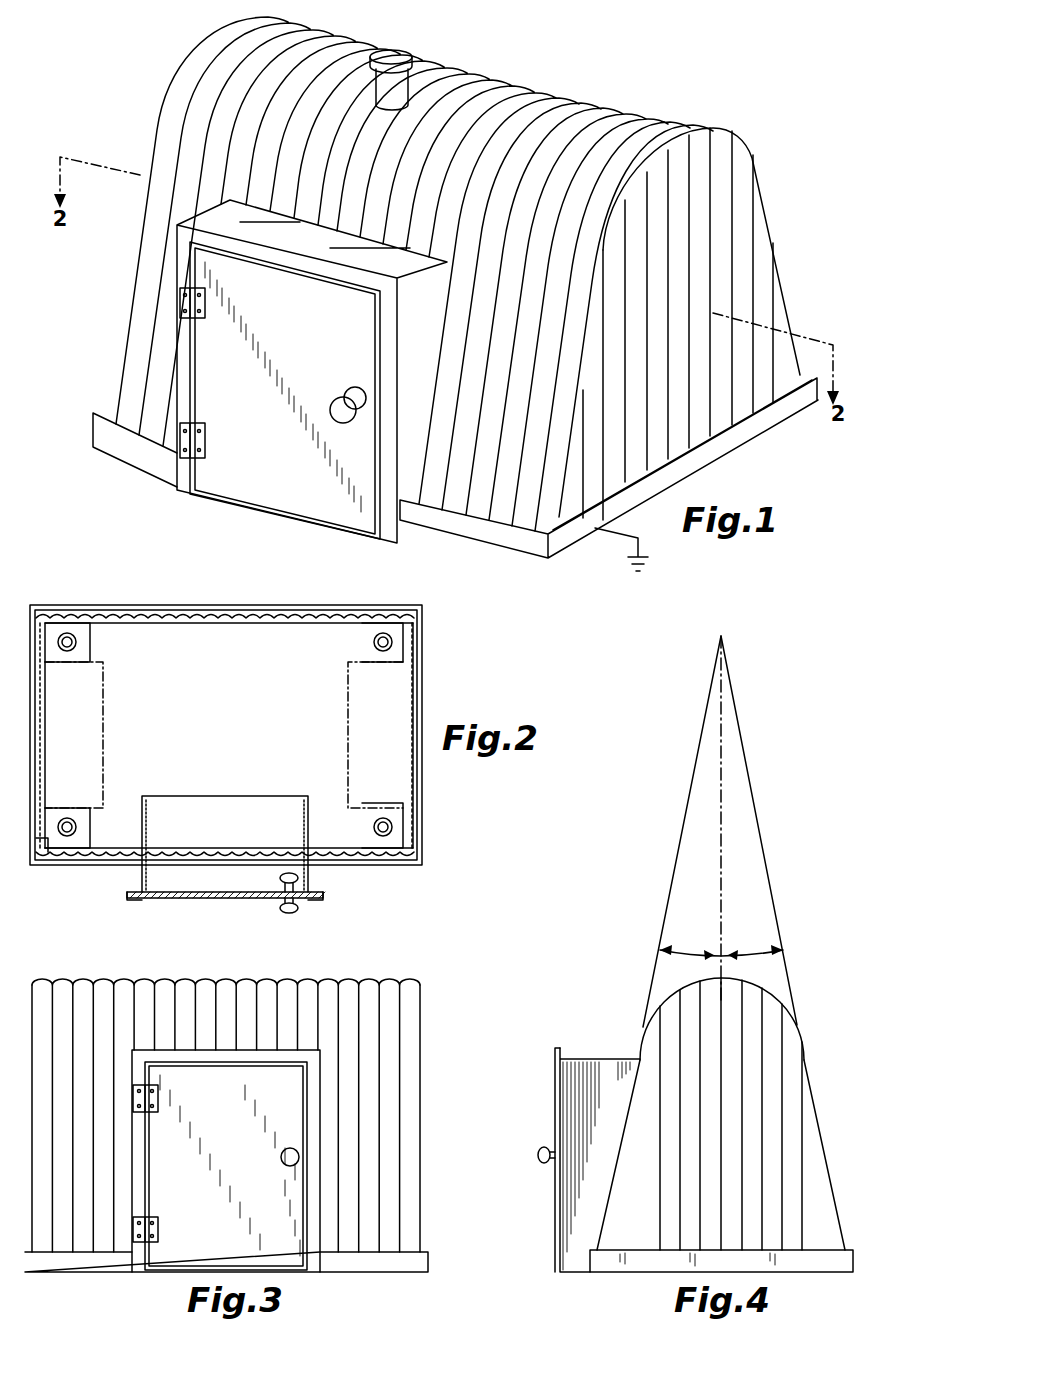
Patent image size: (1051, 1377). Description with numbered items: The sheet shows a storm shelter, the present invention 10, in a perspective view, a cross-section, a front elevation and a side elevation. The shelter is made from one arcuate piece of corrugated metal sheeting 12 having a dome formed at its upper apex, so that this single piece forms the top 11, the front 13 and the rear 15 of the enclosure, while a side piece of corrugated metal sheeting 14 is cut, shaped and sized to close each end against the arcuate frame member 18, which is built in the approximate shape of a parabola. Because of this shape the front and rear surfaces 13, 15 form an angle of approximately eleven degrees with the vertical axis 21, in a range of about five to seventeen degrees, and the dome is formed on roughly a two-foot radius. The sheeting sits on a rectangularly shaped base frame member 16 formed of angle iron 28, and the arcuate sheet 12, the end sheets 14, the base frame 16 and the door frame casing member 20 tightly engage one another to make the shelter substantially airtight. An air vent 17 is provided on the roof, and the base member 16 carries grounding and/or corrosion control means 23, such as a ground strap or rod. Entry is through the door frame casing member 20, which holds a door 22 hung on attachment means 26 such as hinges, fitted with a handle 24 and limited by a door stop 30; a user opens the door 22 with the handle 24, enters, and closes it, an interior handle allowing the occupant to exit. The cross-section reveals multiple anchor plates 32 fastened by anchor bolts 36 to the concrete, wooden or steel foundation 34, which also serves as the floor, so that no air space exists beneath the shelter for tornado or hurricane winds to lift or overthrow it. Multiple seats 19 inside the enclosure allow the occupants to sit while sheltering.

In FIG. 1, the present invention 10 is at (658, 69).
In FIG. 2, the present invention 10 is at (443, 668).
In FIG. 3, the present invention 10 is at (435, 995).
In FIG. 4, the present invention 10 is at (817, 1025).
In FIG. 1, the top 11 is at (660, 135).
In FIG. 3, the top 11 is at (348, 982).
In FIG. 1, the corrugated metal sheeting 12 is at (213, 50).
In FIG. 3, the corrugated metal sheeting 12 is at (390, 1050).
In FIG. 1, the front 13 is at (488, 407).
In FIG. 2, the front 13 is at (342, 848).
In FIG. 3, the front 13 is at (370, 1118).
In FIG. 4, the front 13 is at (640, 1045).
In FIG. 1, the side piece of corrugated metal sheeting 14 is at (745, 183).
In FIG. 2, the side piece of corrugated metal sheeting 14 is at (415, 753).
In FIG. 4, the side piece of corrugated metal sheeting 14 is at (775, 1190).
In FIG. 2, the rear 15 is at (153, 612).
In FIG. 4, the rear 15 is at (815, 1110).
In FIG. 1, the base frame member 16 is at (757, 430).
In FIG. 2, the base frame member 16 is at (425, 708).
In FIG. 3, the base frame member 16 is at (412, 1258).
In FIG. 4, the base frame member 16 is at (790, 1262).
In FIG. 1, the air vent 17 is at (398, 50).
In FIG. 2, the arcuate frame member 18 is at (40, 845).
In FIG. 2, the seats 19 is at (340, 720).
In FIG. 1, the door frame casing member 20 is at (225, 215).
In FIG. 2, the door frame casing member 20 is at (142, 857).
In FIG. 4, the door frame casing member 20 is at (588, 1059).
In FIG. 4, the vertical axis 21 is at (722, 740).
In FIG. 1, the door 22 is at (230, 365).
In FIG. 2, the door 22 is at (223, 898).
In FIG. 3, the door 22 is at (170, 1262).
In FIG. 1, the grounding and/or corrosion control means 23 is at (647, 547).
In FIG. 1, the handle 24 is at (335, 415).
In FIG. 2, the handle 24 is at (292, 872).
In FIG. 3, the handle 24 is at (281, 1158).
In FIG. 4, the handle 24 is at (538, 1156).
In FIG. 1, the attachment means 26 is at (178, 302).
In FIG. 3, the attachment means 26 is at (160, 1098).
In FIG. 2, the angle iron 28 is at (175, 605).
In FIG. 1, the door stop 30 is at (387, 545).
In FIG. 2, the door stop 30 is at (133, 898).
In FIG. 3, the door stop 30 is at (313, 1272).
In FIG. 4, the door stop 30 is at (555, 1048).
In FIG. 2, the anchor plates 32 is at (367, 638).
In FIG. 2, the foundation 34 is at (237, 645).
In FIG. 2, the anchor bolts 36 is at (375, 827).